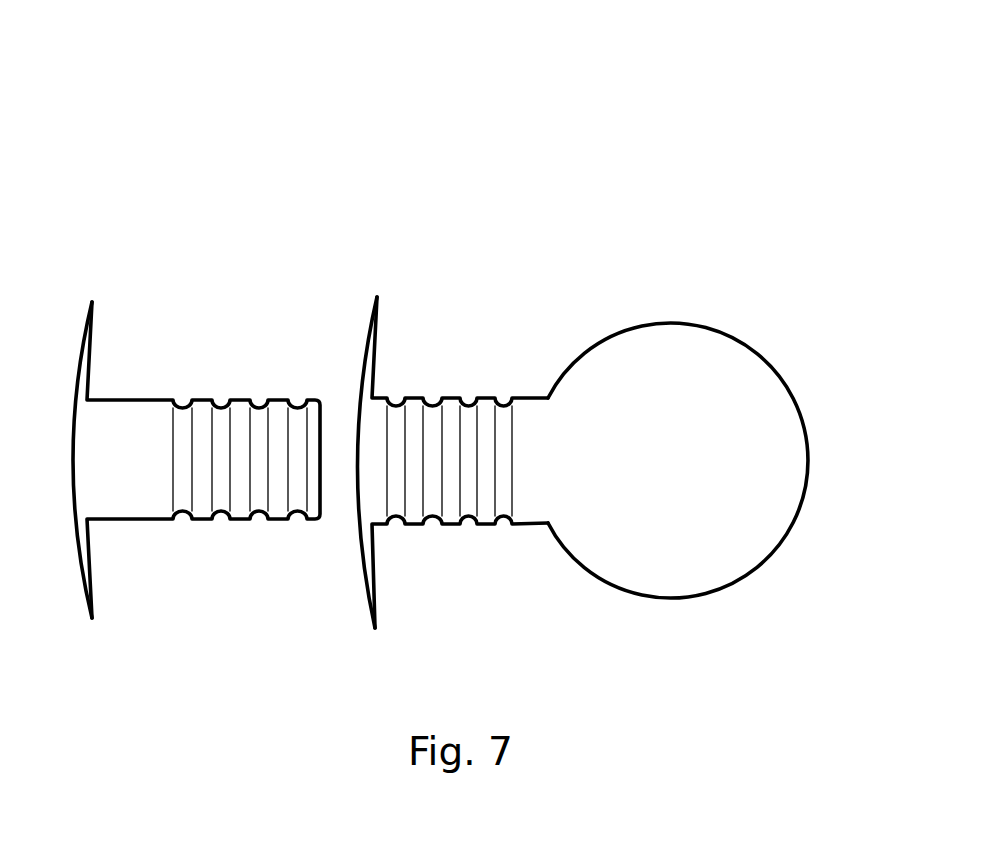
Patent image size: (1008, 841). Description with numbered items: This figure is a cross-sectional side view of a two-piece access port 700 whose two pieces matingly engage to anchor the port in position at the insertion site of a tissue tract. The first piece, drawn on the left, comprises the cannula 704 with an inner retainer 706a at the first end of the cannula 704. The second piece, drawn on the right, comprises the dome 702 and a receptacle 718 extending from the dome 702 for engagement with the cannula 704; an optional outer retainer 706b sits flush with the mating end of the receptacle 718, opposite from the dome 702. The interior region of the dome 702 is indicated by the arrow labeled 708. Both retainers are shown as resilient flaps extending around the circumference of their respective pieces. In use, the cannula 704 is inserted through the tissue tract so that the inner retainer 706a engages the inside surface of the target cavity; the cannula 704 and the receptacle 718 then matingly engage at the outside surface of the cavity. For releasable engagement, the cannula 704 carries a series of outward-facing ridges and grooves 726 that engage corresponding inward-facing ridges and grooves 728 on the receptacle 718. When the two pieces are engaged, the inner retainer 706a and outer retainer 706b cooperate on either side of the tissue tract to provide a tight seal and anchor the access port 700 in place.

The access port 700 is at (637, 165).
The dome 702 is at (612, 337).
The cannula 704 is at (130, 400).
The inner retainer 706a is at (92, 303).
The outer retainer 706b is at (377, 293).
The ball interior 708 is at (677, 447).
The receptacle 718 is at (410, 398).
The outward-facing ridges and grooves 726 is at (320, 537).
The inward-facing ridges and grooves 728 is at (532, 538).